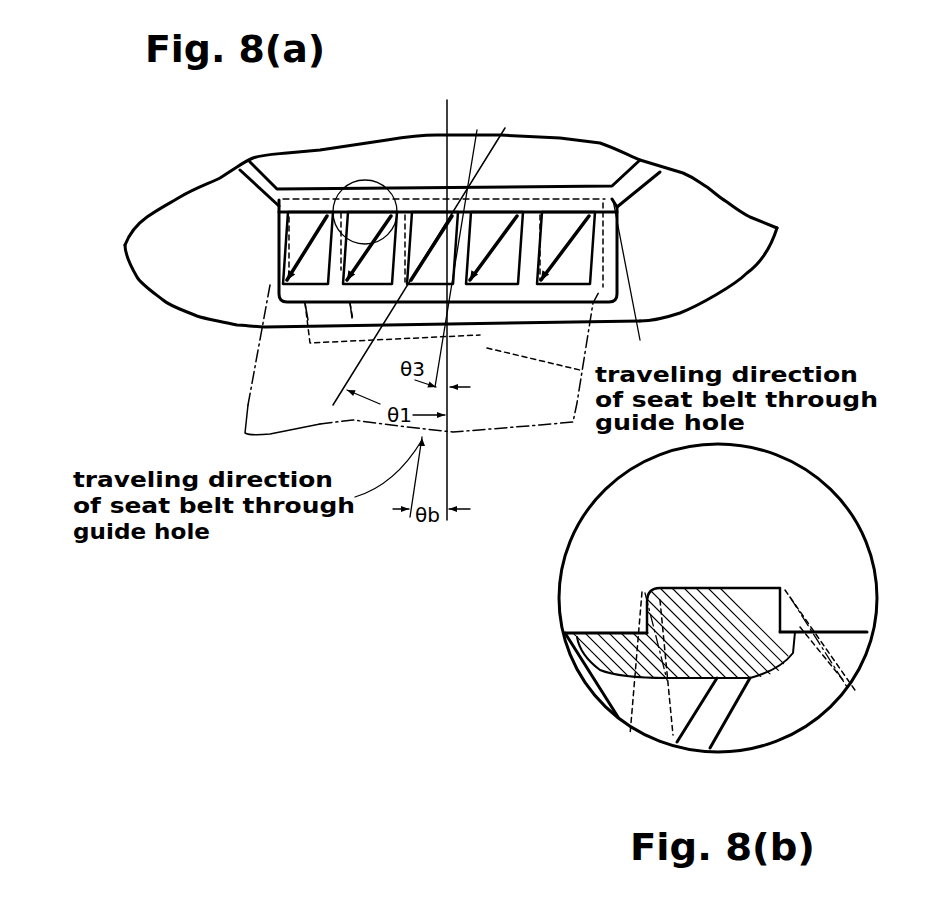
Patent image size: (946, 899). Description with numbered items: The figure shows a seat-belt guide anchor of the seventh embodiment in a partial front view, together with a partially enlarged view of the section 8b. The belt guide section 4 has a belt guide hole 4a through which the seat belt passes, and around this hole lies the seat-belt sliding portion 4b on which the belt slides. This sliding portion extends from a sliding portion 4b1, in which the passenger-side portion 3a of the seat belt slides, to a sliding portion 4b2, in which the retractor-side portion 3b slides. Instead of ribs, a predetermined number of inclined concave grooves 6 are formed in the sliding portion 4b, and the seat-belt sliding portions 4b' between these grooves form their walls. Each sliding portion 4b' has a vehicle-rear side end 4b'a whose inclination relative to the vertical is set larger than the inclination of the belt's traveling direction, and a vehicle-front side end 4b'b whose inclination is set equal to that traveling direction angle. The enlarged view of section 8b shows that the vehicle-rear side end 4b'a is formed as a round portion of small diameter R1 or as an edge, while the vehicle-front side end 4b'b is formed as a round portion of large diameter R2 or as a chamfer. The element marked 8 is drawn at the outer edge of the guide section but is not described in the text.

In FIG. 8A, the belt guide section 4 is at (690, 230).
In FIG. 8A, the belt guide hole 4a is at (531, 197).
In FIG. 8A, the seat-belt sliding portion 4b is at (492, 284).
In FIG. 8B, the seat-belt sliding portion 4b is at (646, 683).
In FIG. 8A, the seat-belt sliding portion forming the concave groove 4b' is at (465, 191).
In FIG. 8B, the seat-belt sliding portion forming the concave groove 4b' is at (713, 563).
In FIG. 8A, the sliding portion for passenger-side belt portion 4b1 is at (352, 319).
In FIG. 8A, the sliding portion for retractor-side belt portion 4b2 is at (245, 341).
In FIG. 8B, the vehicle-rear side end of the seat-belt sliding portion 4b'a is at (811, 655).
In FIG. 8B, the vehicle-front side end of the seat-belt sliding portion 4b'b is at (588, 663).
In FIG. 8A, the concave groove 6 is at (373, 247).
In FIG. 8B, the concave groove 6 is at (600, 631).
In FIG. 8A, the belt guide edge 8 is at (600, 292).
In FIG. 8A, the section 8b is at (387, 190).
In FIG. 8A, the passenger-side portion of the seat belt 3a is at (270, 400).
In FIG. 8A, the retractor-side portion of the seat belt 3b is at (620, 329).
In FIG. 8B, the small diameter R1 is at (785, 585).
In FIG. 8B, the large diameter R2 is at (656, 583).